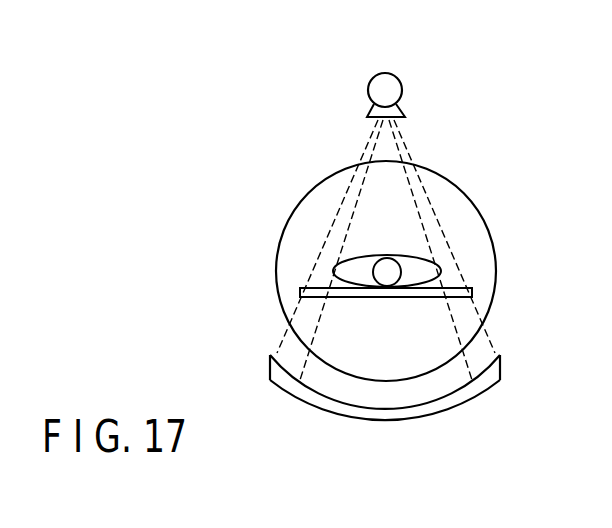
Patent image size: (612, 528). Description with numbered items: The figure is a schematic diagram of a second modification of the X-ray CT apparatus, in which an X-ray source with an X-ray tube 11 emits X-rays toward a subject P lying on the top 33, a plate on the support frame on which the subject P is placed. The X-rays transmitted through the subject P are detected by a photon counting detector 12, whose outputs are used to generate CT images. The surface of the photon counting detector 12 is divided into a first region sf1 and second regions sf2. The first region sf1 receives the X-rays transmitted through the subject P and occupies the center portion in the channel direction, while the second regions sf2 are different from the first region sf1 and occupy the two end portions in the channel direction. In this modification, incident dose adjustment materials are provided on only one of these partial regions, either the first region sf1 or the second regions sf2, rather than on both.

The X-ray tube 11 is at (396, 77).
The subject P is at (395, 257).
The top 33 is at (366, 298).
The photon counting detector 12 is at (388, 391).
The first region sf1 is at (440, 400).
The second regions sf2 is at (284, 367).